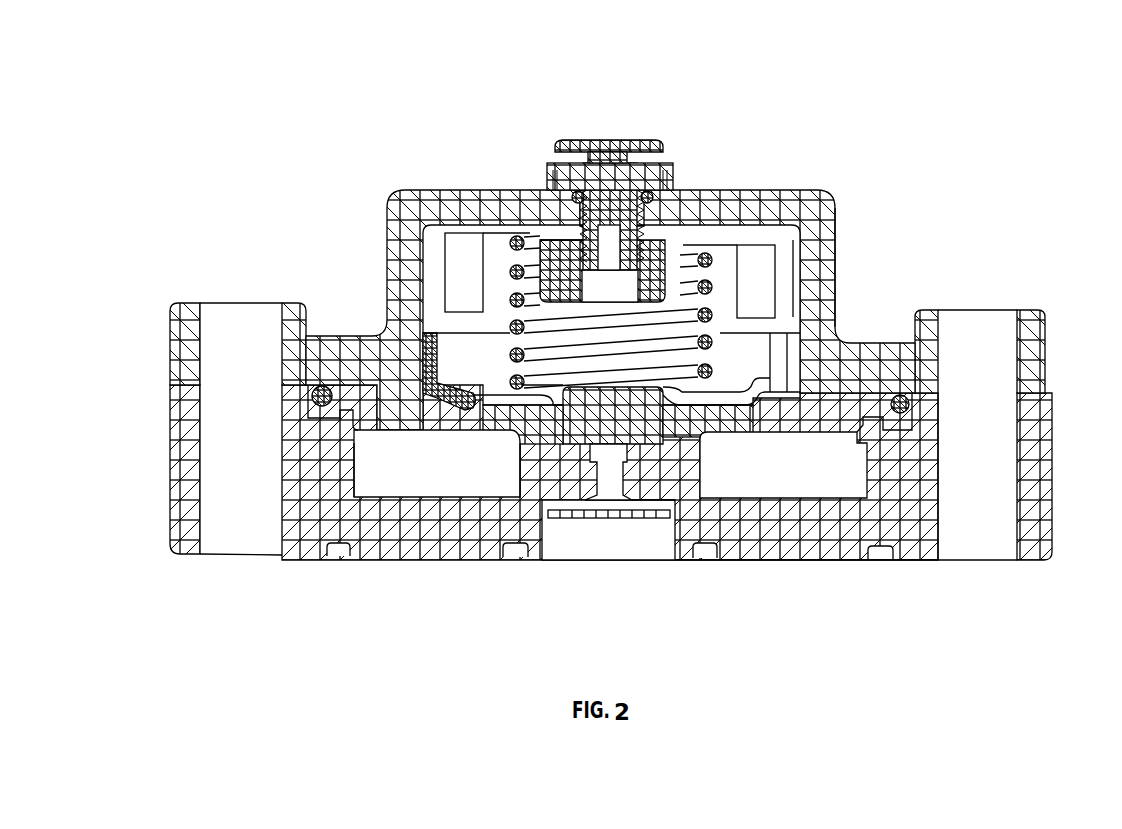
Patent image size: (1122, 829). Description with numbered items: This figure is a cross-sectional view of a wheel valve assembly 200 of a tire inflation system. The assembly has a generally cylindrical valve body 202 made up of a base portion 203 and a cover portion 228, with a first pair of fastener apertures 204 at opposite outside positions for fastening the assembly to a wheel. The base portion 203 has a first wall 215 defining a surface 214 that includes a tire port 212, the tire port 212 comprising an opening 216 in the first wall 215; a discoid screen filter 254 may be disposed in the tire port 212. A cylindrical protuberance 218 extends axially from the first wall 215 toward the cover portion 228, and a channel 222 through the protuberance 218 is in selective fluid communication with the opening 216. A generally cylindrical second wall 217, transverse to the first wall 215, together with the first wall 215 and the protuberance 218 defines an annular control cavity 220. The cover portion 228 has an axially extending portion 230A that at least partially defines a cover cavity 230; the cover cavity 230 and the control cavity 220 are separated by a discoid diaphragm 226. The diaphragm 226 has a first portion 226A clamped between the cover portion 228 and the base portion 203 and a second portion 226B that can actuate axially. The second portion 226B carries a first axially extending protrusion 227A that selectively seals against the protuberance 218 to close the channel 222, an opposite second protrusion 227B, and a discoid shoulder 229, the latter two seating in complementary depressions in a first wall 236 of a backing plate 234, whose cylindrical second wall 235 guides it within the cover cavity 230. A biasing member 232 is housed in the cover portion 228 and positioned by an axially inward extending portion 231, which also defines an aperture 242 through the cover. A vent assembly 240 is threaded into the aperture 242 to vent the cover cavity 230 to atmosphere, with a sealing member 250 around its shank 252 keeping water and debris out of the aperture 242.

The wheel valve assembly 200 is at (968, 84).
The valve body 202 is at (843, 559).
The base portion 203 is at (922, 530).
The first pair of fastener apertures 204 is at (215, 412).
The tire port 212 is at (577, 543).
The surface 214 is at (783, 560).
The first wall 215 is at (743, 542).
The opening 216 is at (650, 545).
The second wall 217 is at (925, 468).
The protuberance 218 is at (525, 478).
The annular control cavity 220 is at (373, 473).
The channel 222 is at (622, 518).
The diaphragm 226 is at (320, 405).
The first portion 226A is at (886, 398).
The second portion 226B is at (712, 420).
The first axially extending protrusion 227A is at (672, 442).
The second axially extending protrusion 227B is at (560, 398).
The cover portion 228 is at (740, 207).
The discoid shoulder 229 is at (482, 422).
The cover cavity 230 is at (758, 273).
The axially extending portion 230A is at (820, 230).
The axially inward extending portion 231 is at (557, 232).
The biasing member 232 is at (517, 230).
The backing plate 234 is at (427, 338).
The second wall 235 is at (800, 333).
The first wall 236 is at (770, 378).
The vent assembly 240 is at (625, 190).
The aperture 242 is at (625, 280).
The sealing member 250 is at (648, 192).
The shank 252 is at (583, 192).
The discoid screen filter 254 is at (555, 530).